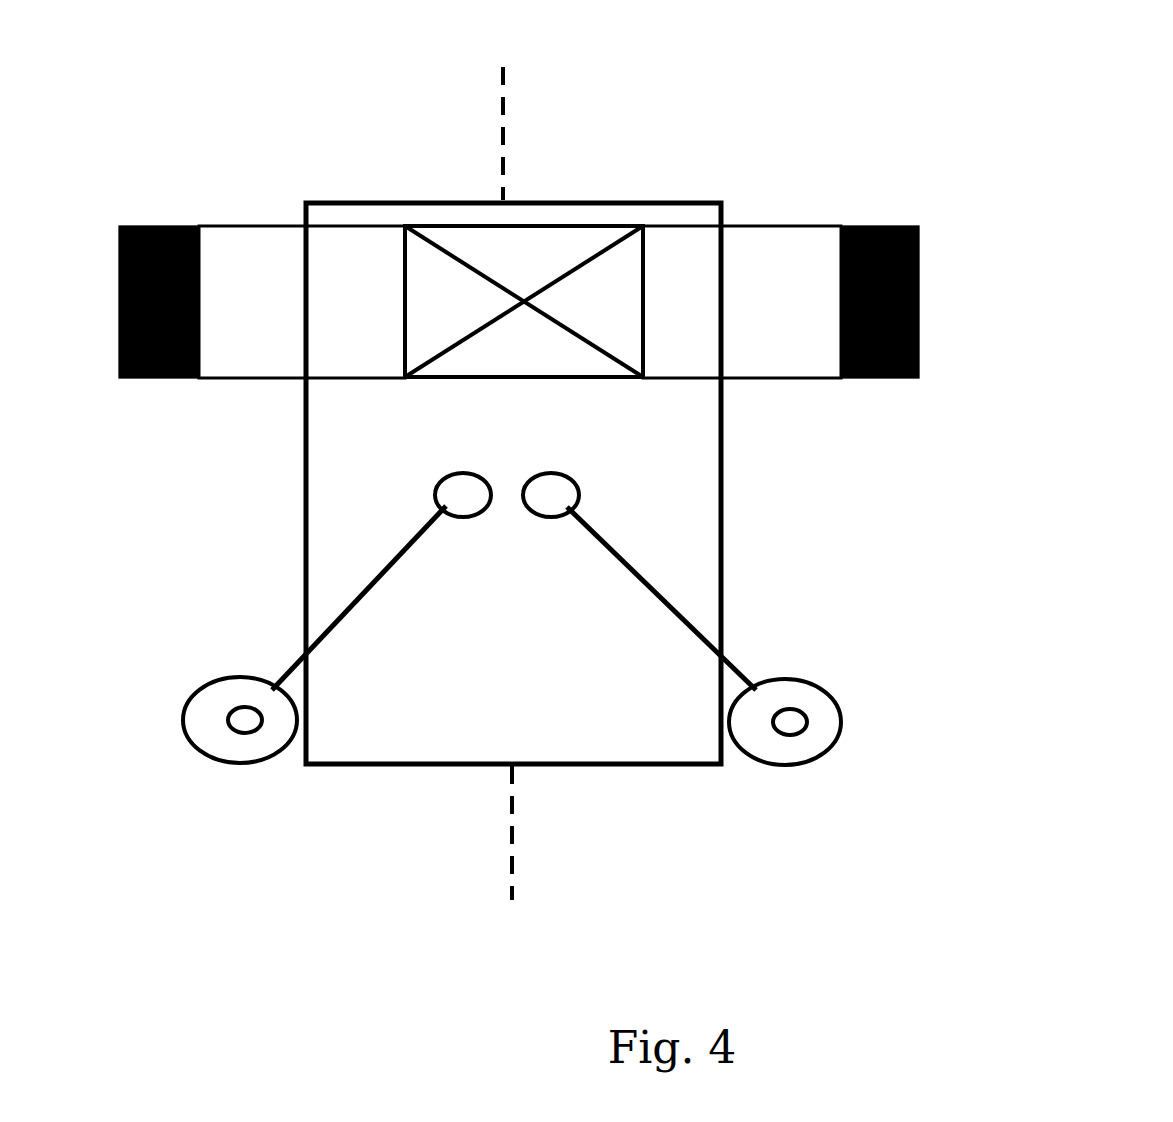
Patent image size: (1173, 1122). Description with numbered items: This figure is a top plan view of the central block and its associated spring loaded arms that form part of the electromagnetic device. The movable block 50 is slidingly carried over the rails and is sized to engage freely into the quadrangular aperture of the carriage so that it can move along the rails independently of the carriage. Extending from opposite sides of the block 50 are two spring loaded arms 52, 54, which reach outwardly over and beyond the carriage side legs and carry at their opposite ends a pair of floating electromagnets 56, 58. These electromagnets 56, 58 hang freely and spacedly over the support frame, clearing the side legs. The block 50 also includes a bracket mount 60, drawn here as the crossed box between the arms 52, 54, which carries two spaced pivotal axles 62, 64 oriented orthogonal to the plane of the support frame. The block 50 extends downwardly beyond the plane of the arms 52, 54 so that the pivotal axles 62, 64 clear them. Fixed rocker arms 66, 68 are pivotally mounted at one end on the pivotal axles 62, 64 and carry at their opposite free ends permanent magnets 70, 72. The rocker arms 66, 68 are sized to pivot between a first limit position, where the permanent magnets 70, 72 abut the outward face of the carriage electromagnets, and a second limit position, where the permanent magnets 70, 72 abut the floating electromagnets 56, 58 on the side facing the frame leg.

The movable block 50 is at (296, 441).
The spring loaded arm 52 is at (270, 223).
The spring loaded arm 54 is at (752, 226).
The floating electromagnet 56 is at (117, 278).
The floating electromagnet 58 is at (920, 260).
The bracket mount 60 is at (525, 250).
The pivotal axle 62 is at (470, 513).
The pivotal axle 64 is at (556, 516).
The rocker arm 66 is at (348, 612).
The rocker arm 68 is at (676, 602).
The permanent magnet 70 is at (245, 765).
The permanent magnet 72 is at (780, 766).